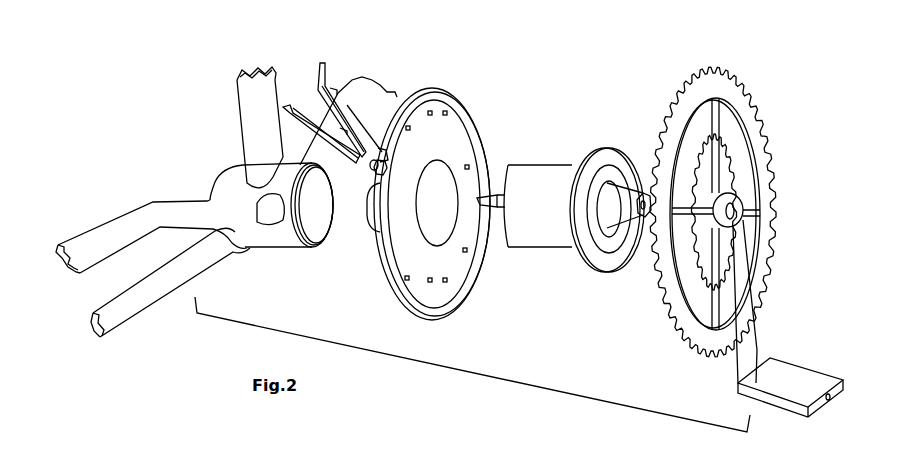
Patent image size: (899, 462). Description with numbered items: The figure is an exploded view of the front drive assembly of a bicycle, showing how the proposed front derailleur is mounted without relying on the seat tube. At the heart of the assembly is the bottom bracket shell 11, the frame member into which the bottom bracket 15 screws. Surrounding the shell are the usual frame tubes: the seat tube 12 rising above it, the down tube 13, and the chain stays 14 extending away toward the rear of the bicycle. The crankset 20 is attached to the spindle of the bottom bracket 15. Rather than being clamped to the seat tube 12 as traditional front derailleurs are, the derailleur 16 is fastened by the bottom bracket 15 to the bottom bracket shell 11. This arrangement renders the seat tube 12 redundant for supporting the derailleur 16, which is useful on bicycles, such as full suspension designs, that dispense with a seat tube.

The bottom bracket shell 11 is at (228, 173).
The seat tube 12 is at (247, 125).
The down tube 13 is at (362, 97).
The chain stays 14 is at (252, 205).
The bottom bracket 15 is at (608, 140).
The derailleur 16 is at (496, 124).
The crankset 20 is at (648, 298).